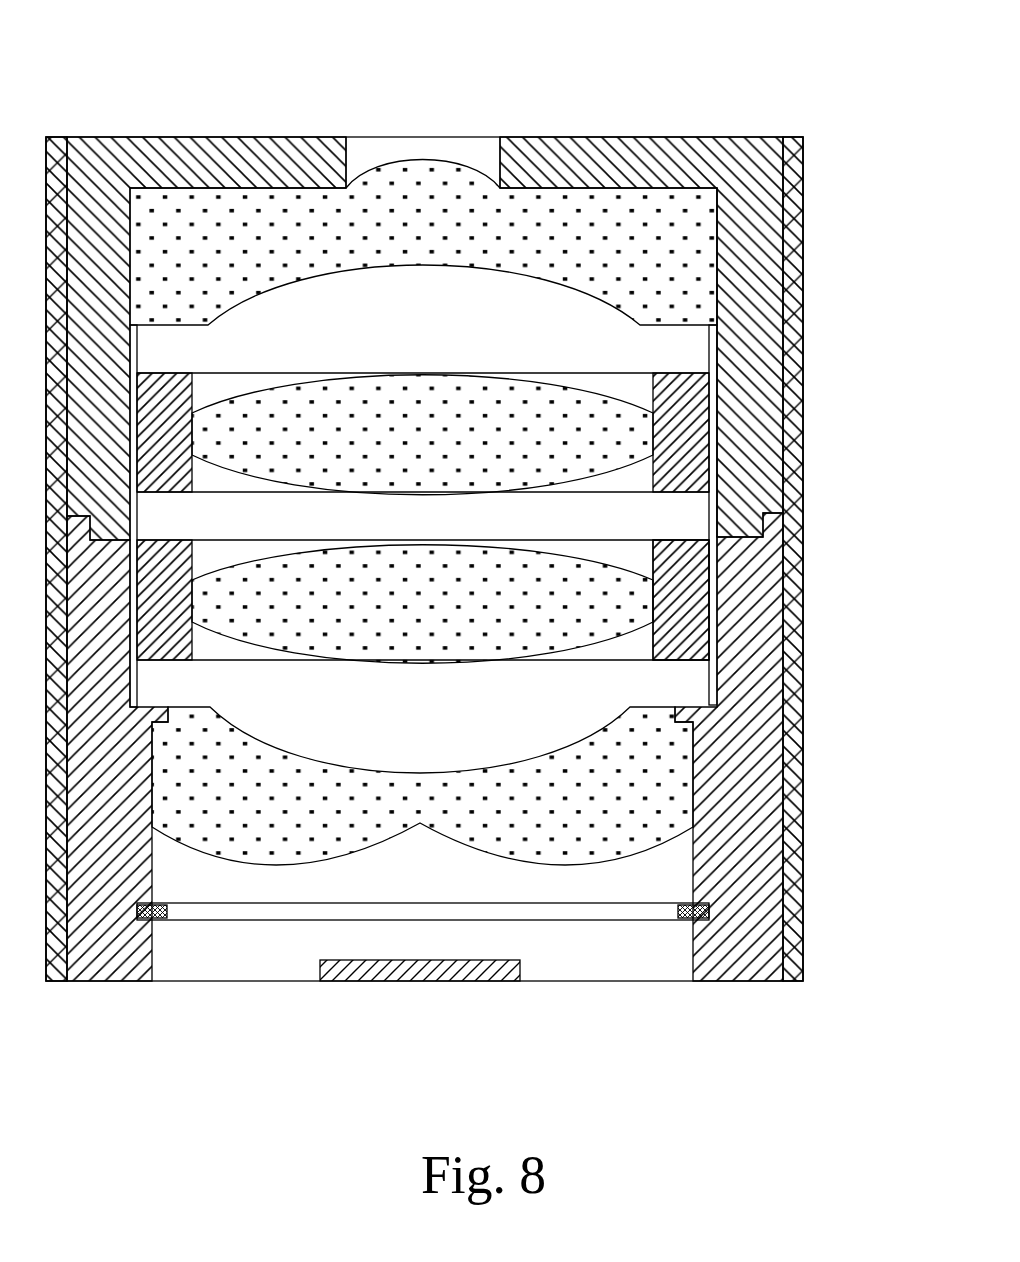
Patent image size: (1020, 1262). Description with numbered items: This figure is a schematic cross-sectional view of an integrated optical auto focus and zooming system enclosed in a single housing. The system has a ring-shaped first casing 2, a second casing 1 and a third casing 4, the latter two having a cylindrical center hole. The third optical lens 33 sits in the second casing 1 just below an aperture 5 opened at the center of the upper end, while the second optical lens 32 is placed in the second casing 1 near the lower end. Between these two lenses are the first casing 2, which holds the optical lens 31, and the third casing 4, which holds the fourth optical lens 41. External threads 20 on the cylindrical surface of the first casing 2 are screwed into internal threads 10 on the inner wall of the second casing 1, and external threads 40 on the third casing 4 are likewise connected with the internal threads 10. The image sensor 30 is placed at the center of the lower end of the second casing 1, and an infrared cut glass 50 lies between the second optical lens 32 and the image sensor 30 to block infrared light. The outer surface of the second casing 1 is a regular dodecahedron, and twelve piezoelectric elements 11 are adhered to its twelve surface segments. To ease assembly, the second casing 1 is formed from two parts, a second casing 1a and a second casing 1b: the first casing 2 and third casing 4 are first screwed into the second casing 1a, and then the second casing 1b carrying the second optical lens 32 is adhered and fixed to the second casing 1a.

The second casing 1 is at (640, 100).
The second casing 1a is at (670, 162).
The second casing 1b is at (772, 585).
The first casing 2 is at (160, 405).
The third casing 4 is at (683, 610).
The aperture 5 is at (404, 150).
The internal threads 10 is at (718, 330).
The piezoelectric elements 11 is at (787, 718).
The external threads 20 is at (717, 417).
The image sensor 30 is at (442, 973).
The optical lens 31 is at (517, 400).
The second optical lens 32 is at (235, 775).
The third optical lens 33 is at (222, 218).
The external threads 40 is at (712, 578).
The fourth optical lens 41 is at (487, 607).
The infrared cut glass 50 is at (650, 920).